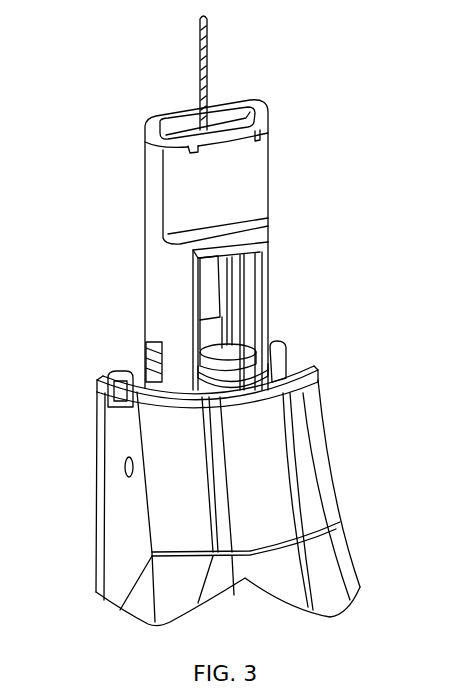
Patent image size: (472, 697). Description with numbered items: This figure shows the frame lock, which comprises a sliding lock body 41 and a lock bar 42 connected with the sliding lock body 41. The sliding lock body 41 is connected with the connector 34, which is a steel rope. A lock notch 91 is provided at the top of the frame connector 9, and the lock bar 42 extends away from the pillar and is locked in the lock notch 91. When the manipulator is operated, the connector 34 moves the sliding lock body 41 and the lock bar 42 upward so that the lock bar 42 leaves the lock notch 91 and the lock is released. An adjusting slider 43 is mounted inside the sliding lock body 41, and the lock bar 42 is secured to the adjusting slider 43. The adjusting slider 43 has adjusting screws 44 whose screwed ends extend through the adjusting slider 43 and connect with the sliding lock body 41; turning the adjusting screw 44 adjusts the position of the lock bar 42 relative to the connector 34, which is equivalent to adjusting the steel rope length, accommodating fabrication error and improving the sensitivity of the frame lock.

The frame connector 9 is at (280, 523).
The connector 34 is at (210, 83).
The sliding lock body 41 is at (243, 188).
The lock bar 42 is at (110, 387).
The adjusting slider 43 is at (245, 353).
The adjusting screw 44 is at (208, 288).
The lock notch 91 is at (125, 372).